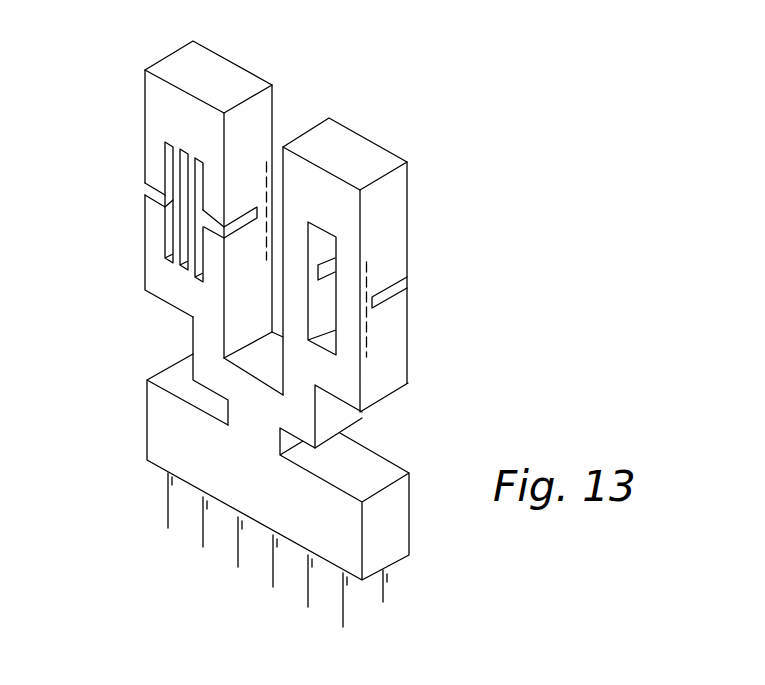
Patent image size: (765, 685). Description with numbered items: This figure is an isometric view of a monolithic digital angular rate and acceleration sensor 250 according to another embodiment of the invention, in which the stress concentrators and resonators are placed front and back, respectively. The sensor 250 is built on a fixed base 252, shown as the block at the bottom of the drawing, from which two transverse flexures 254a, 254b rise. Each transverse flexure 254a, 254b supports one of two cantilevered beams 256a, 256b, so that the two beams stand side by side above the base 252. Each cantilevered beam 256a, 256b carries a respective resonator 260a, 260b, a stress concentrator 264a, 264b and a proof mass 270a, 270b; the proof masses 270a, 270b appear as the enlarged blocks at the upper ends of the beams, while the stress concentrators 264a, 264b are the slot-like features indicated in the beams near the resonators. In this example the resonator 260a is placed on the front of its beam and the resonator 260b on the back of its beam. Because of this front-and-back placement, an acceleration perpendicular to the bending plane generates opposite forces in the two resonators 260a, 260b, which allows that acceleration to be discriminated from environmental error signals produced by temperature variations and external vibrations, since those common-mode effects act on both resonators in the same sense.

The monolithic digital angular rate and acceleration sensor 250 is at (358, 72).
The fixed base 252 is at (305, 523).
The transverse flexure 254a is at (205, 326).
The transverse flexure 254b is at (303, 403).
The cantilevered beam 256a is at (133, 237).
The cantilevered beam 256b is at (422, 353).
The resonator 260a is at (177, 168).
The resonator 260b is at (408, 220).
The stress concentrator 264a is at (266, 188).
The stress concentrator 264b is at (365, 318).
The proof mass 270a is at (192, 62).
The proof mass 270b is at (355, 148).